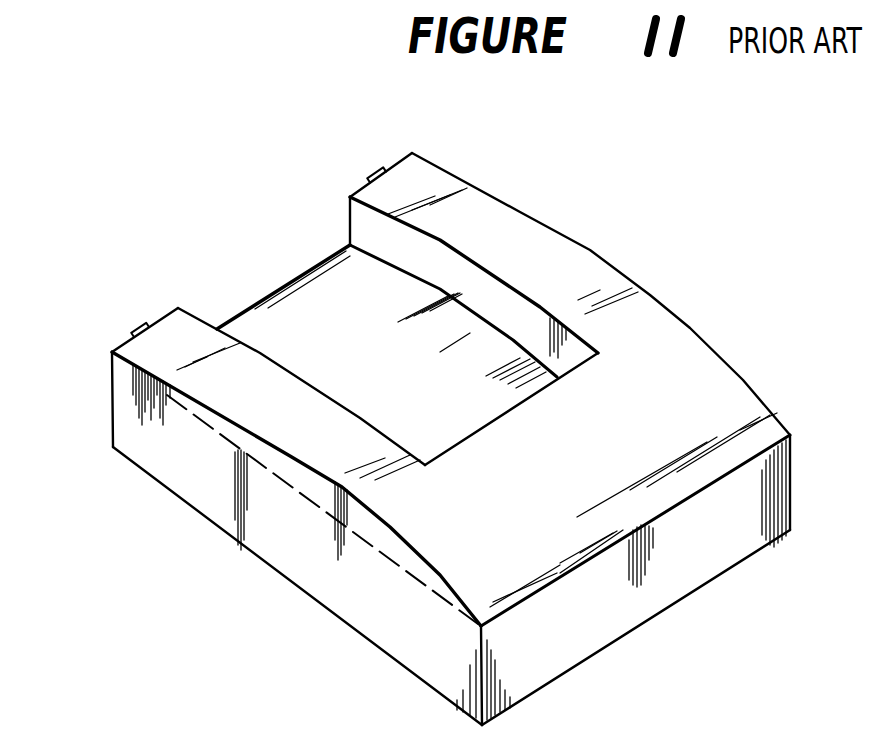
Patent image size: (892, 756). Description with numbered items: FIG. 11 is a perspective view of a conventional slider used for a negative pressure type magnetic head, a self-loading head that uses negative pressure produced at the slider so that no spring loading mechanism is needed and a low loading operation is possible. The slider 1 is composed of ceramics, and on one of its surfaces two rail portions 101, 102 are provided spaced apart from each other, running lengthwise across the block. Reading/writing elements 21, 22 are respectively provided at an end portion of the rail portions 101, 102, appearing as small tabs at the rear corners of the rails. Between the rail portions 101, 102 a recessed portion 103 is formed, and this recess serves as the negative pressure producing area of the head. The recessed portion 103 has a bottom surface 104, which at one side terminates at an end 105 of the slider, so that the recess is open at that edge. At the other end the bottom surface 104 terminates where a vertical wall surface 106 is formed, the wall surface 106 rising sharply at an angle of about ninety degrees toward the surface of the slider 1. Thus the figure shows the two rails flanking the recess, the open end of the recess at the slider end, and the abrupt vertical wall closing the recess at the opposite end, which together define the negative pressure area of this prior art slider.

The slider 1 is at (317, 567).
The reading/writing element 21 is at (137, 327).
The reading/writing element 22 is at (373, 172).
The rail portion 101 is at (176, 338).
The rail portion 102 is at (428, 182).
The recessed portion 103 is at (452, 342).
The bottom surface 104 is at (280, 330).
The end of the slider 105 is at (323, 260).
The vertical wall surface 106 is at (455, 443).